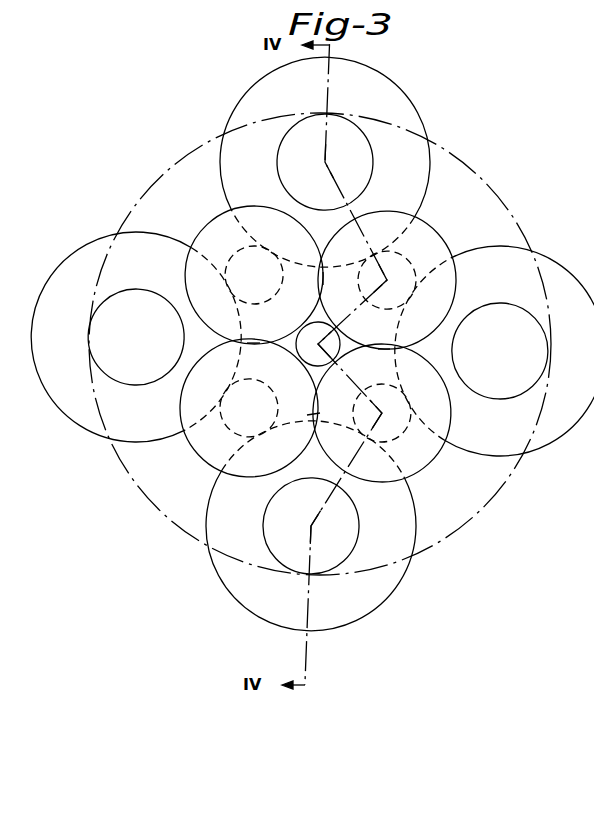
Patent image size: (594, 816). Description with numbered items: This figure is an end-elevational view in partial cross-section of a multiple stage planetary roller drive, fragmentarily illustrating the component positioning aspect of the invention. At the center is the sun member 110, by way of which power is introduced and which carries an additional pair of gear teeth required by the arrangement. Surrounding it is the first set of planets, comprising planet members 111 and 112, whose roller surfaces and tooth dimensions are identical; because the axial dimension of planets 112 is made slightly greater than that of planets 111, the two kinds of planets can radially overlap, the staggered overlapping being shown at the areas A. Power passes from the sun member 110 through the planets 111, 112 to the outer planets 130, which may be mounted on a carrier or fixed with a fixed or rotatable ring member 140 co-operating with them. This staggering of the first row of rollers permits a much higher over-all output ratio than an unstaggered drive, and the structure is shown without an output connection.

The sun member 110 is at (311, 347).
The planet member 111 is at (223, 228).
The planet member 112 is at (440, 246).
The planets 130 is at (360, 174).
The ring member 140 is at (450, 538).
The areas of radial overlapping A is at (321, 279).